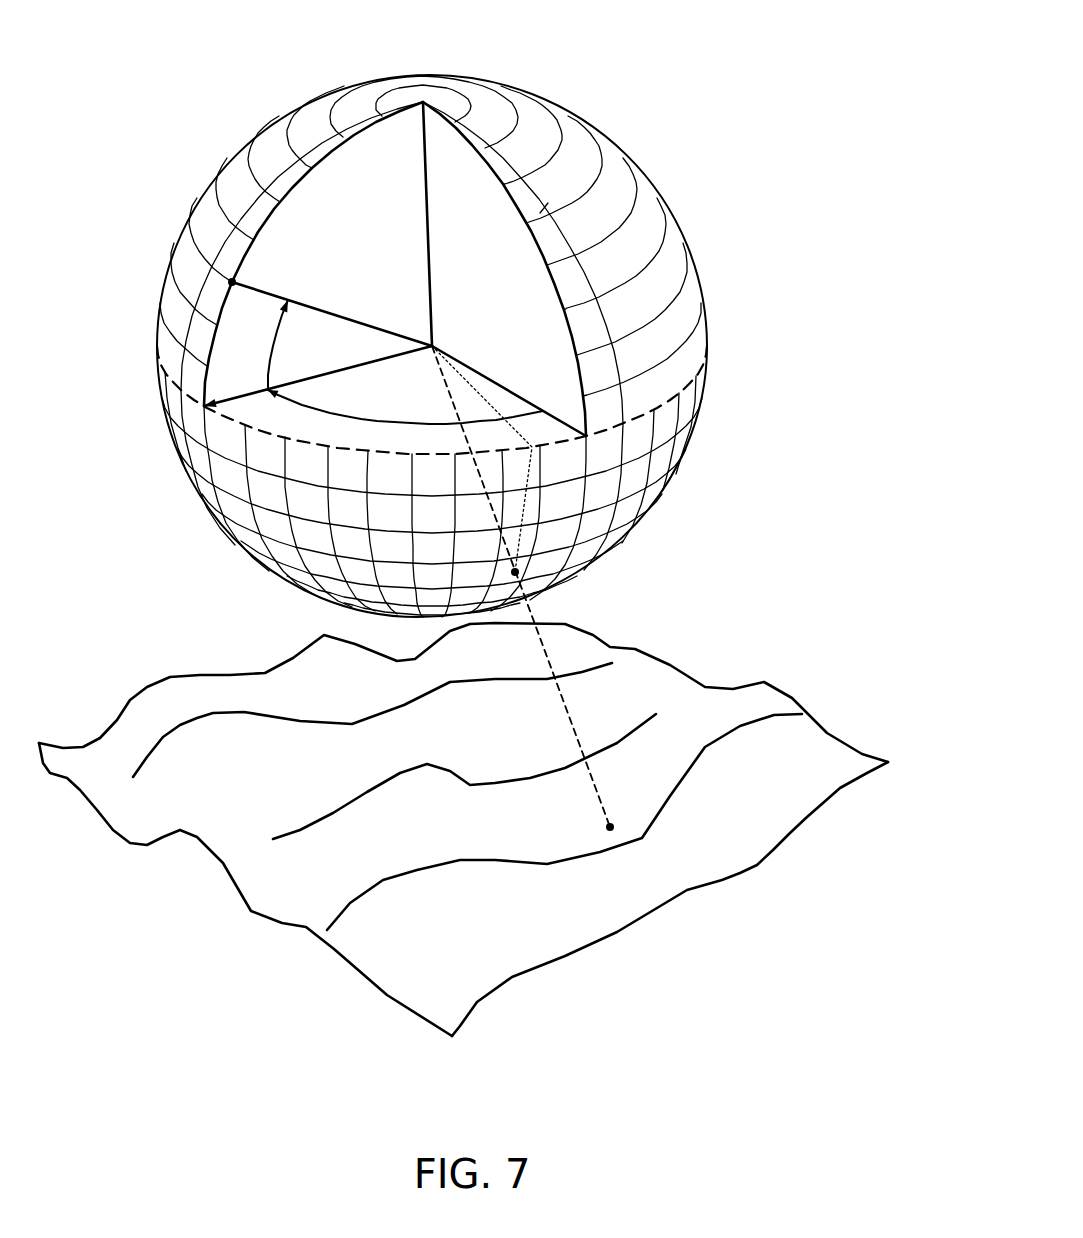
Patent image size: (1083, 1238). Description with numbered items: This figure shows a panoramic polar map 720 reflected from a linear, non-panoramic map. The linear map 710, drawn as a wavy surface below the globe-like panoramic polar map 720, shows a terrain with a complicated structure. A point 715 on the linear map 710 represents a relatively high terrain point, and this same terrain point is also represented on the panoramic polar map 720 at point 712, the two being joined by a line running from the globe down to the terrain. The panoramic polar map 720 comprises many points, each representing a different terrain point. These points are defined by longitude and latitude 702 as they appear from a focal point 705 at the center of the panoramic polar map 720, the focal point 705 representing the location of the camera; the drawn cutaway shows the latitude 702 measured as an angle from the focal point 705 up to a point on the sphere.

The latitude 702 is at (266, 288).
The focal point 705 is at (430, 344).
The linear map 710 is at (713, 673).
The point 712 is at (520, 573).
The point 715 is at (612, 830).
The panoramic polar map 720 is at (677, 452).